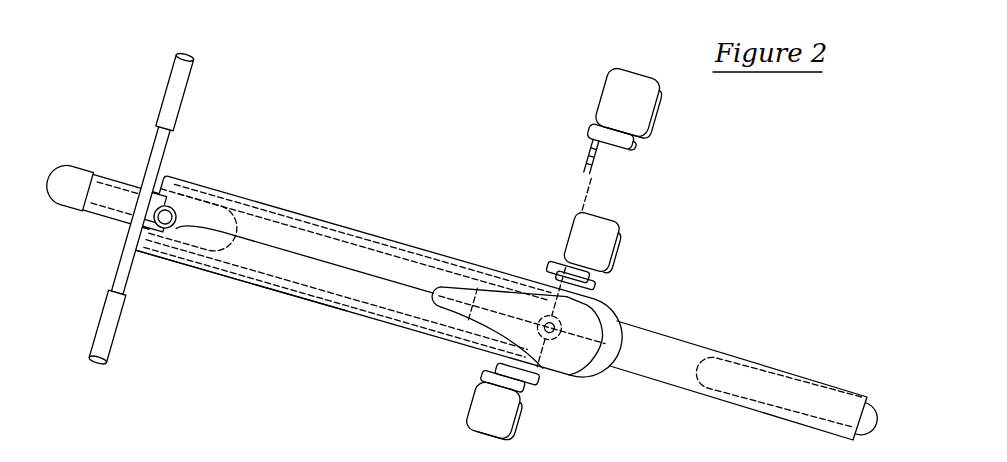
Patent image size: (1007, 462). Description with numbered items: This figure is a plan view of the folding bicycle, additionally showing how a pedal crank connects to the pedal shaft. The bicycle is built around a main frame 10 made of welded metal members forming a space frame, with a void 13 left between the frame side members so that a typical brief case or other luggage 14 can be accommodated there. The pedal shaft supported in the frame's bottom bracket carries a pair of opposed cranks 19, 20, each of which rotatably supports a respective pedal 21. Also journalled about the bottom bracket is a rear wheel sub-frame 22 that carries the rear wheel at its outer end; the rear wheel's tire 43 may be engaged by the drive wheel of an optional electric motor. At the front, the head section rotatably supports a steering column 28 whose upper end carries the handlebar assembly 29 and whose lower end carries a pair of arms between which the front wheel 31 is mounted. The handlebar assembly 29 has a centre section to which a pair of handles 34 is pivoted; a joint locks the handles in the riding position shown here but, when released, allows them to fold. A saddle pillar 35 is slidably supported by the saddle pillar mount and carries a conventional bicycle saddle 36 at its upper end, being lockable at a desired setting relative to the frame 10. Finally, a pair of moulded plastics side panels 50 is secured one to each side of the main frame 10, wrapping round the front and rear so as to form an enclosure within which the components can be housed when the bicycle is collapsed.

The main frame 10 is at (262, 203).
The void 13 is at (488, 282).
The luggage 14 is at (287, 272).
The crank 19 is at (590, 242).
The crank 20 is at (495, 377).
The pedal 21 is at (633, 100).
The rear wheel sub-frame 22 is at (663, 353).
The steering column 28 is at (166, 214).
The handlebar assembly 29 is at (155, 165).
The front wheel 31 is at (83, 193).
The handle 34 is at (180, 77).
The saddle pillar 35 is at (550, 340).
The bicycle saddle 36 is at (573, 360).
The tire 43 is at (823, 407).
The side panel 50 is at (360, 227).